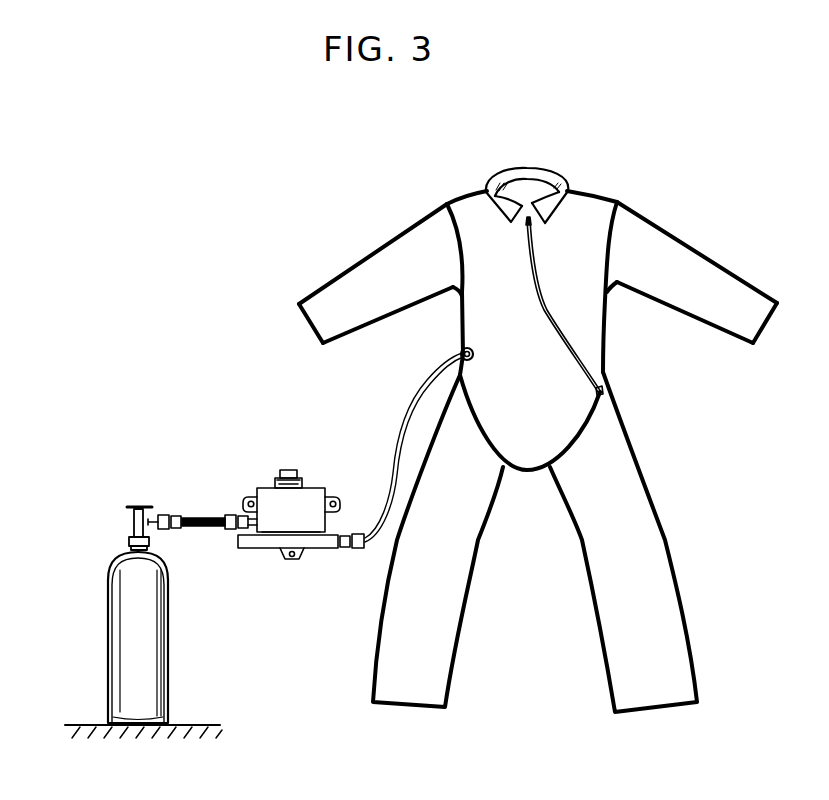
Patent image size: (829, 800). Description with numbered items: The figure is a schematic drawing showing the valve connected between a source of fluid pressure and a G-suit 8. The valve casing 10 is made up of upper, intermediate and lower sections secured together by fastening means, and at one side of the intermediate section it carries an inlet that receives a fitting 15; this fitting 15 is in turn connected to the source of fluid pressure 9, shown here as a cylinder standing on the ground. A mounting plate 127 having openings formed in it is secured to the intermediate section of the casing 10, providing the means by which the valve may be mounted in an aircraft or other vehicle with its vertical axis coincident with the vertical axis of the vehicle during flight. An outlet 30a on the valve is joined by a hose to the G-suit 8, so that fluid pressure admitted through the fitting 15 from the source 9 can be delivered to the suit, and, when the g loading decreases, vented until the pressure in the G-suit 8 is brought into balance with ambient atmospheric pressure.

The G-suit 8 is at (593, 343).
The source of fluid pressure 9 is at (165, 638).
The valve casing 10 is at (313, 490).
The fitting 15 is at (233, 513).
The mounting plate 127 is at (340, 502).
The outlet 30a is at (343, 550).